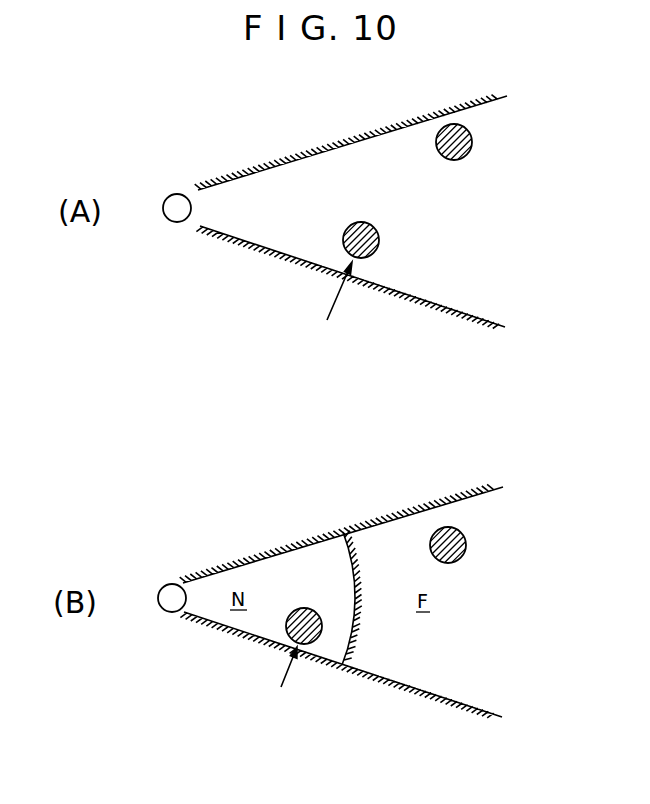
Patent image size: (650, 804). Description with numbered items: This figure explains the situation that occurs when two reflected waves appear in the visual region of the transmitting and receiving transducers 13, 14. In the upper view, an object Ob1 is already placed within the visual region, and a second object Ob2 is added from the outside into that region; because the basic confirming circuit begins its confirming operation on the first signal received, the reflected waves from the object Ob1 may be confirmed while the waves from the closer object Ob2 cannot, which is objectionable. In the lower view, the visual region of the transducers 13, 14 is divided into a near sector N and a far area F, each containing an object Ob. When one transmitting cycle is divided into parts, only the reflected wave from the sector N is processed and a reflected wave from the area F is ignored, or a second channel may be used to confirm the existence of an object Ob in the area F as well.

The transmitting transducer 13 is at (176, 424).
The receiving transducer 14 is at (177, 222).
The object Ob1 is at (473, 142).
The object Ob2 is at (380, 245).
The object Ob is at (305, 608).